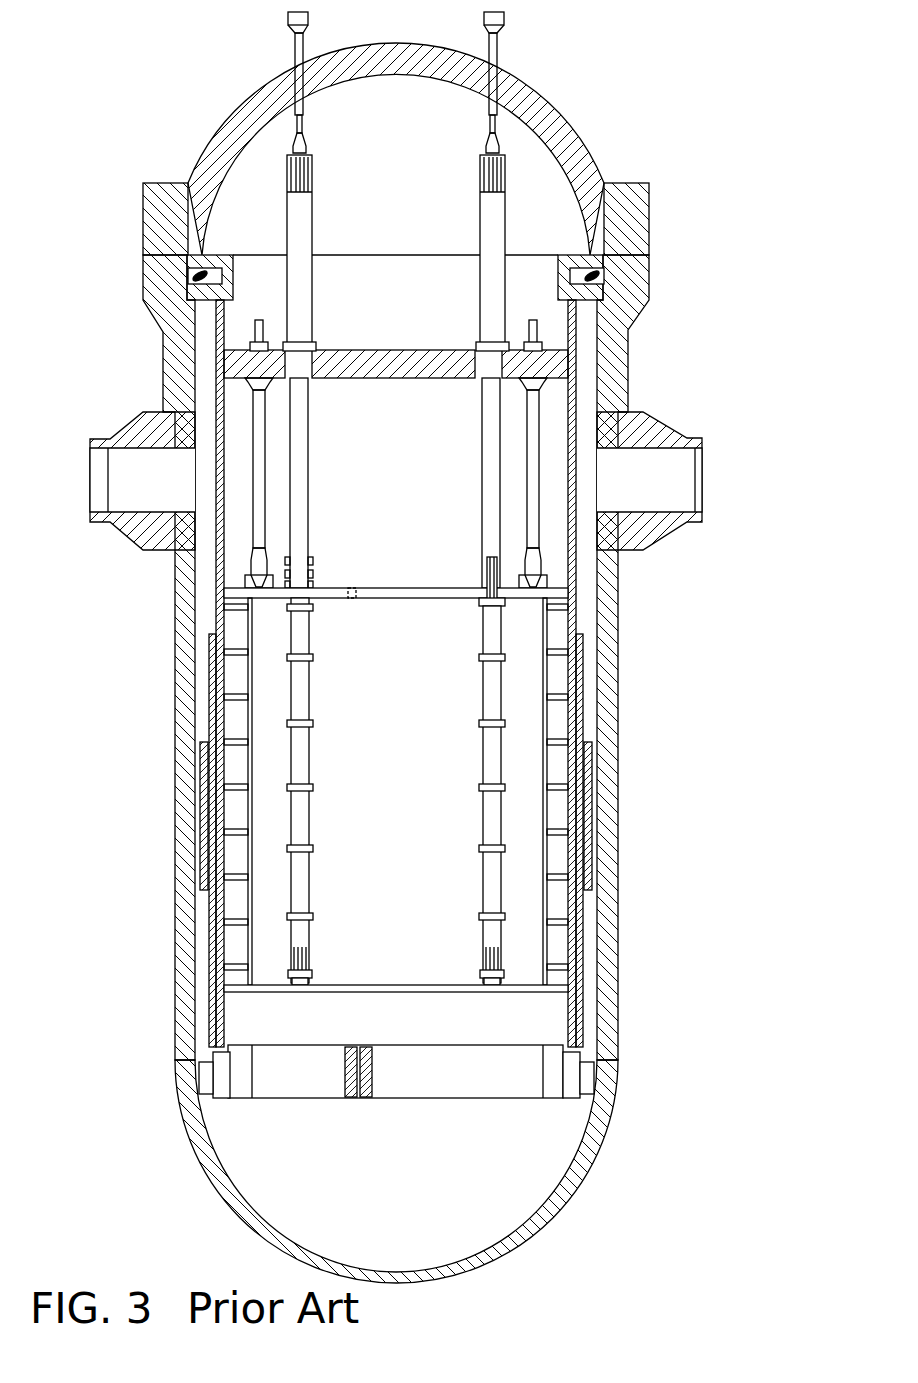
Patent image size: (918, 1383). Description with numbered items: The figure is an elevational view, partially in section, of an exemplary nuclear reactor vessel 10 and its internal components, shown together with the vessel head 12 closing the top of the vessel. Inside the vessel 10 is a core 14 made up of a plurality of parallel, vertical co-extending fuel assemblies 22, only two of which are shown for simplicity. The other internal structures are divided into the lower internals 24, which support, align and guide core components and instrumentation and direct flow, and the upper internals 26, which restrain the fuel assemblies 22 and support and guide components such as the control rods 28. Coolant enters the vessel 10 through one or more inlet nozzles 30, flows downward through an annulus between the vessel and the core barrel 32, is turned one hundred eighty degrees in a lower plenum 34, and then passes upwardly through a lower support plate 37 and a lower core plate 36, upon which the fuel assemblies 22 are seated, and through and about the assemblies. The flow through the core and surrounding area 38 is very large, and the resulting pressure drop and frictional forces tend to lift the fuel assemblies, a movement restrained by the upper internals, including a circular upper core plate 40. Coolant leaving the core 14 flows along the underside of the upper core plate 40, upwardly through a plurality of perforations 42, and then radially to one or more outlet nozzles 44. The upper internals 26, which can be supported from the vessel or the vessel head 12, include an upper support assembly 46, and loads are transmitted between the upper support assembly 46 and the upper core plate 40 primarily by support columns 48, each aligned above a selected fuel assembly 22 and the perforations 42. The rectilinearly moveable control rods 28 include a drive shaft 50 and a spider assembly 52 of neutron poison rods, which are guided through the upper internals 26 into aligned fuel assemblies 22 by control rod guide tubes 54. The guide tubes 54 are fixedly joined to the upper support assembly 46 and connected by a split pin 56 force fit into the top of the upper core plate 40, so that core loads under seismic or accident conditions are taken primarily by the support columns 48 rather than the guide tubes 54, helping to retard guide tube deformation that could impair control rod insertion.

The vessel 10 is at (617, 664).
The closure head 12 is at (650, 218).
The core 14 is at (417, 786).
The fuel assemblies 22 is at (310, 693).
The lower internals 24 is at (417, 1032).
The upper internals 26 is at (419, 457).
The control rods 28 is at (482, 600).
The inlet nozzles 30 is at (126, 418).
The core barrel 32 is at (217, 585).
The lower plenum 34 is at (560, 1148).
The lower core plate 36 is at (455, 985).
The lower support plate 37 is at (437, 1085).
The core and surrounding area 38 is at (452, 765).
The upper core plate 40 is at (433, 597).
The perforations 42 is at (355, 587).
The outlet nozzles 44 is at (668, 430).
The upper support assembly 46 is at (566, 253).
The support columns 48 is at (525, 432).
The drive shaft 50 is at (485, 557).
The spider assembly 52 is at (482, 590).
The control rod guide tubes 54 is at (308, 423).
The split pin 56 is at (507, 616).